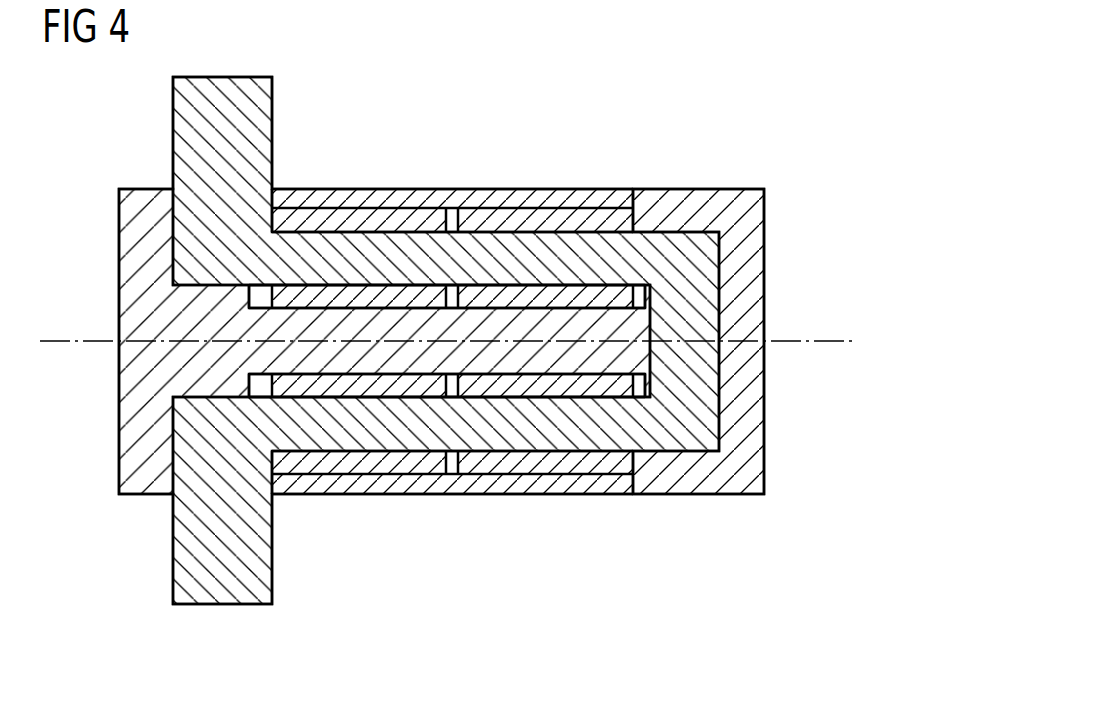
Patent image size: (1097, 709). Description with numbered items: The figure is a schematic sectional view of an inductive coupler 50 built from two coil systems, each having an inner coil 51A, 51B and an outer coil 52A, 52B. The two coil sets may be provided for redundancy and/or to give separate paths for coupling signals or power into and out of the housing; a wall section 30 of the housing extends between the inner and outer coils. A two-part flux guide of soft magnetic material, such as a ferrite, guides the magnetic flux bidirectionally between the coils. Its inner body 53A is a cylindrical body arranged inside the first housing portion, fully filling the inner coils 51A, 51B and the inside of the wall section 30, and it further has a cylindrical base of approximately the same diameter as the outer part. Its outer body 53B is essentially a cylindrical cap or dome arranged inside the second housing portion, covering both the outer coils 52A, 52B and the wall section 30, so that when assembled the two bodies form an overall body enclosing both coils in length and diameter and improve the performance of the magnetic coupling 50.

The inductive coupler 50 is at (713, 108).
The wall section 30 is at (713, 257).
The inner body 53A is at (128, 407).
The outer body 53B is at (755, 428).
The outer coil 52A is at (385, 220).
The outer coil 52B is at (545, 220).
The inner coil 51A is at (360, 390).
The inner coil 51B is at (548, 390).